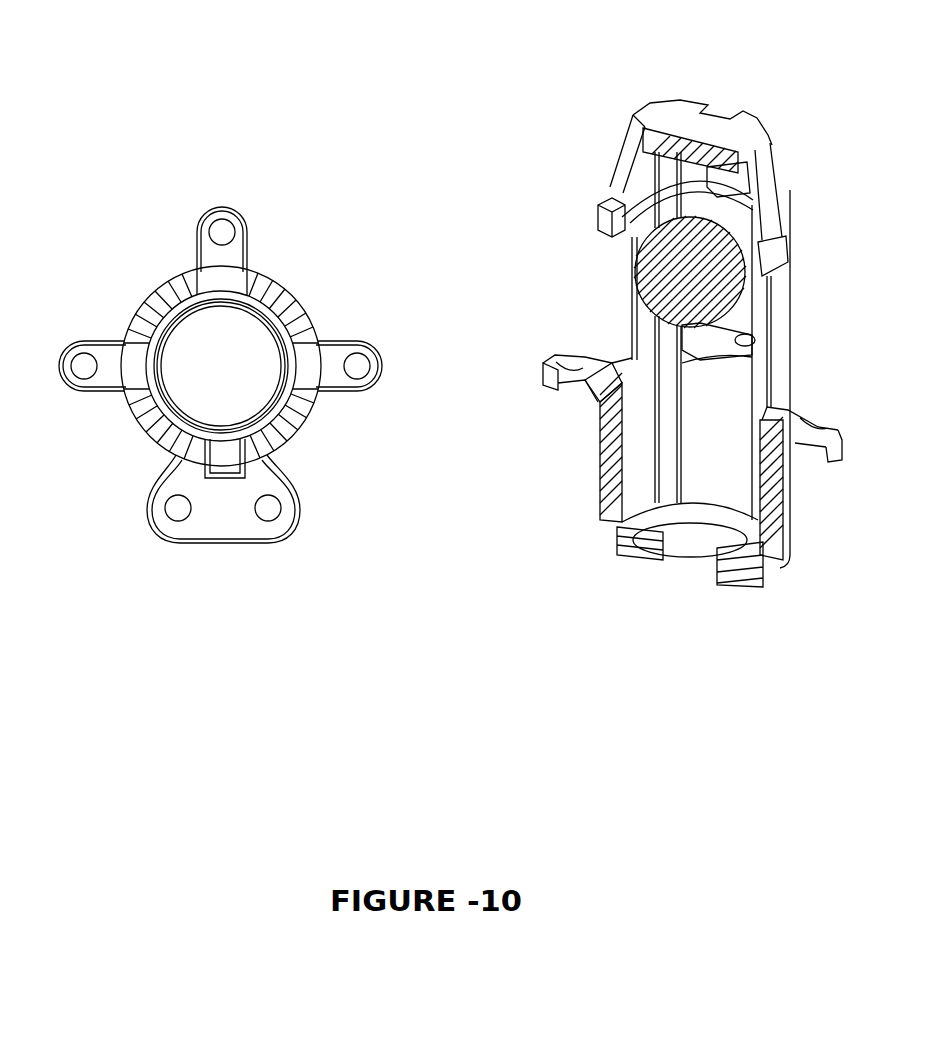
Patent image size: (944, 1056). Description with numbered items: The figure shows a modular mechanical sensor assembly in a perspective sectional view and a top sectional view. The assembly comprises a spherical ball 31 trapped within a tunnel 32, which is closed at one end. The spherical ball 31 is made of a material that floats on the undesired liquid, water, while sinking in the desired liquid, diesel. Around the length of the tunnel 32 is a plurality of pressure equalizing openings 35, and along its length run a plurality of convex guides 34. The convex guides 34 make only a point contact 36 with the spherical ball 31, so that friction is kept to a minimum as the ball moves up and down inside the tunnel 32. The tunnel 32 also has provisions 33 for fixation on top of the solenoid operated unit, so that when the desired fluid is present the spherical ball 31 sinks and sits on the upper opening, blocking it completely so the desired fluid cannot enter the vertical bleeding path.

The spherical ball 31 is at (667, 280).
The tunnel 32 is at (792, 330).
The provisions for fixation 33 is at (218, 240).
The convex guides 34 is at (289, 330).
The pressure equalizing openings 35 is at (220, 460).
The point contact 36 is at (167, 323).